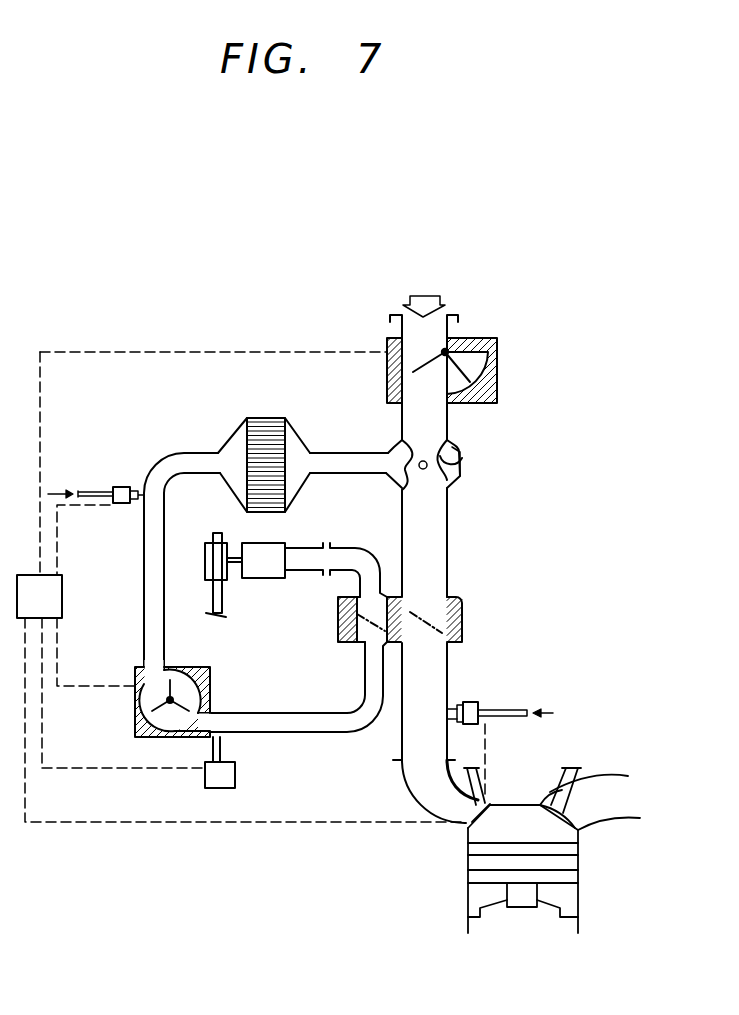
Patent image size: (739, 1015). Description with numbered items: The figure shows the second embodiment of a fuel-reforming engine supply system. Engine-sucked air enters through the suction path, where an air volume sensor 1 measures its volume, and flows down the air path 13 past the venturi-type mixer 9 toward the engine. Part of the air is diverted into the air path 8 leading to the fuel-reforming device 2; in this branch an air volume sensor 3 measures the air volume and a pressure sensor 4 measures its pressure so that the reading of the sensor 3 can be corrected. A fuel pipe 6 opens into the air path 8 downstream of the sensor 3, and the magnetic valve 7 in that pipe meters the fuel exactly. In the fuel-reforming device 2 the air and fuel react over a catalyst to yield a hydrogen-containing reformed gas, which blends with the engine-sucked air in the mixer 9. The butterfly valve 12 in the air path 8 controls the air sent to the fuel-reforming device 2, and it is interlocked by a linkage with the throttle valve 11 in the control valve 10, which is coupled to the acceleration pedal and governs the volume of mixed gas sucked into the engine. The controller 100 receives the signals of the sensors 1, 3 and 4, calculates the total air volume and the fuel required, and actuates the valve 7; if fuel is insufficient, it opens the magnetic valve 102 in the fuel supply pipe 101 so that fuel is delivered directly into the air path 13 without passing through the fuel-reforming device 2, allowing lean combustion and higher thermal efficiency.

The air volume sensor 1 is at (485, 338).
The fuel-reforming device 2 is at (268, 418).
The air volume sensor 3 is at (180, 667).
The pressure sensor 4 is at (236, 778).
The fuel pipe 6 is at (88, 490).
The magnetic valve 7 is at (123, 487).
The air path 8 is at (248, 713).
The mixer 9 is at (462, 456).
The control valve 10 is at (463, 620).
The throttle valve 11 is at (438, 627).
The butterfly valve 12 is at (366, 622).
The air path 13 is at (440, 553).
The controller 100 is at (62, 606).
The fuel supply pipe 101 is at (526, 710).
The magnetic valve 102 is at (470, 702).